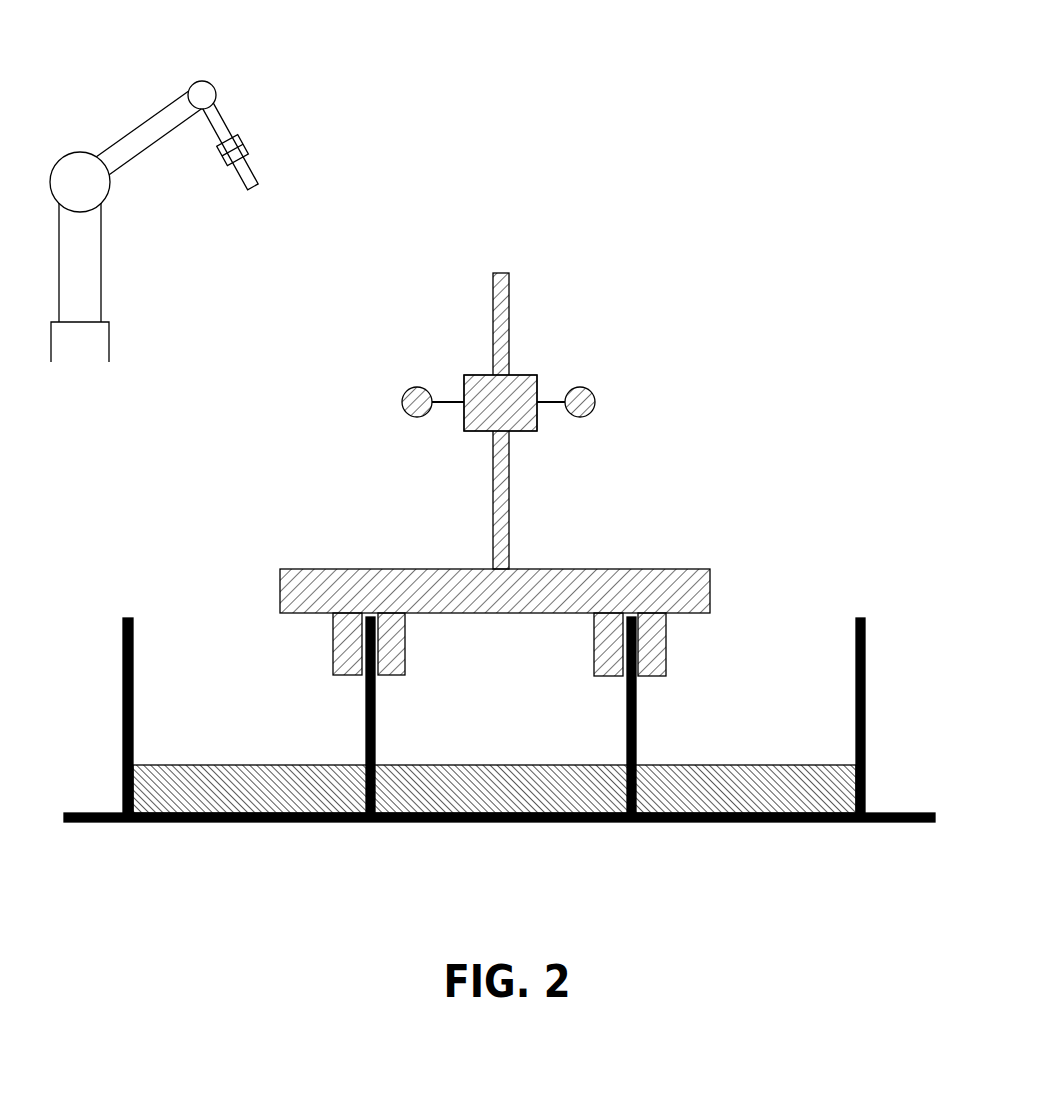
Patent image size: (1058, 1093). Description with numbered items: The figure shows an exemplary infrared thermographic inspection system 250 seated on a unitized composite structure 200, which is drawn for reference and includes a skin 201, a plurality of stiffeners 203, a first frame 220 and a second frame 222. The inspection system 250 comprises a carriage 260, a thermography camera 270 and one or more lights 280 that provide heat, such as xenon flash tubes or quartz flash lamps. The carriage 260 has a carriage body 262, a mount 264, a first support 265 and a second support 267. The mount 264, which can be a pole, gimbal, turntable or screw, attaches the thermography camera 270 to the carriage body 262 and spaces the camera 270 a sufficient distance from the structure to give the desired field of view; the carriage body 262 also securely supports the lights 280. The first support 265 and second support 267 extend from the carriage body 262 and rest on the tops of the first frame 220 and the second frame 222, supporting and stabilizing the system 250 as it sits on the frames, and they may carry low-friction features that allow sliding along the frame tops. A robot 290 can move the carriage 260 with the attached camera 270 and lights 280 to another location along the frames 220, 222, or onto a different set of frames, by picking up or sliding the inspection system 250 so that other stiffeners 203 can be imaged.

The infrared thermographic inspection system 250 is at (598, 36).
The robot 290 is at (253, 125).
The carriage 260 is at (313, 525).
The mount 264 is at (492, 490).
The thermography camera 270 is at (533, 370).
The lights 280 is at (592, 418).
The carriage body 262 is at (280, 588).
The first support 265 is at (332, 638).
The second support 267 is at (592, 645).
The unitized composite structure 200 is at (690, 852).
The skin 201 is at (895, 827).
The stiffeners 203 is at (805, 760).
The first frame 220 is at (375, 735).
The second frame 222 is at (625, 698).